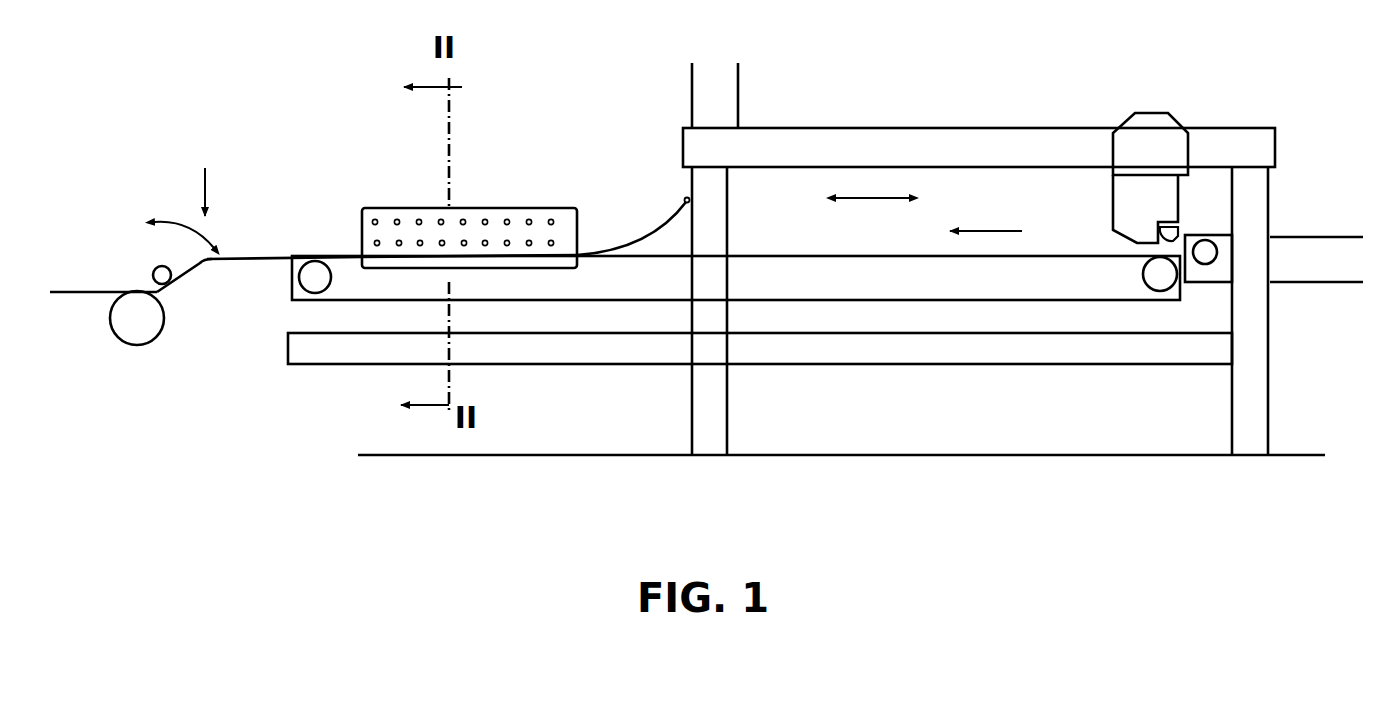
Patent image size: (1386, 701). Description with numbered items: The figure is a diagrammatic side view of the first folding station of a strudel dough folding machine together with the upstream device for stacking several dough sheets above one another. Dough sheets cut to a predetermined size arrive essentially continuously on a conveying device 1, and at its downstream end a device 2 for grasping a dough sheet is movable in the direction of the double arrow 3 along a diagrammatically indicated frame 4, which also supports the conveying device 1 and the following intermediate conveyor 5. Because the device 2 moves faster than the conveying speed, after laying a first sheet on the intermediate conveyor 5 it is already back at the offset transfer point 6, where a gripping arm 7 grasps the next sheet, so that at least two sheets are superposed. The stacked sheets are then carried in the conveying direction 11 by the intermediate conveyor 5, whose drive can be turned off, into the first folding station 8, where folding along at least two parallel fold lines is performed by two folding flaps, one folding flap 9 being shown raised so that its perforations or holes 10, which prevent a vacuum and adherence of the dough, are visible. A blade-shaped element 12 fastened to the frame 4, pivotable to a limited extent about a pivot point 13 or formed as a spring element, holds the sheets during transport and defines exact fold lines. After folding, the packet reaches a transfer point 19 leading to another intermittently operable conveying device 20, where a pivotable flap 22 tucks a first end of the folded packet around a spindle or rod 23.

The conveying device 1 is at (1315, 257).
The device for grasping a dough sheet 2 is at (1140, 135).
The double arrow 3 is at (872, 215).
The frame 4 is at (1255, 418).
The intermediate conveyor 5 is at (832, 272).
The transfer point 6 is at (1195, 238).
The gripping arm 7 is at (1177, 230).
The first folding station 8 is at (416, 261).
The folding flap 9 is at (512, 217).
The perforations or holes 10 is at (415, 220).
The conveying direction 11 is at (986, 217).
The blade-shaped element 12 is at (622, 235).
The pivot point 13 is at (685, 197).
The transfer point 19 is at (205, 178).
The conveying device 20 is at (107, 292).
The flap 22 is at (200, 270).
The spindle or rod 23 is at (155, 268).